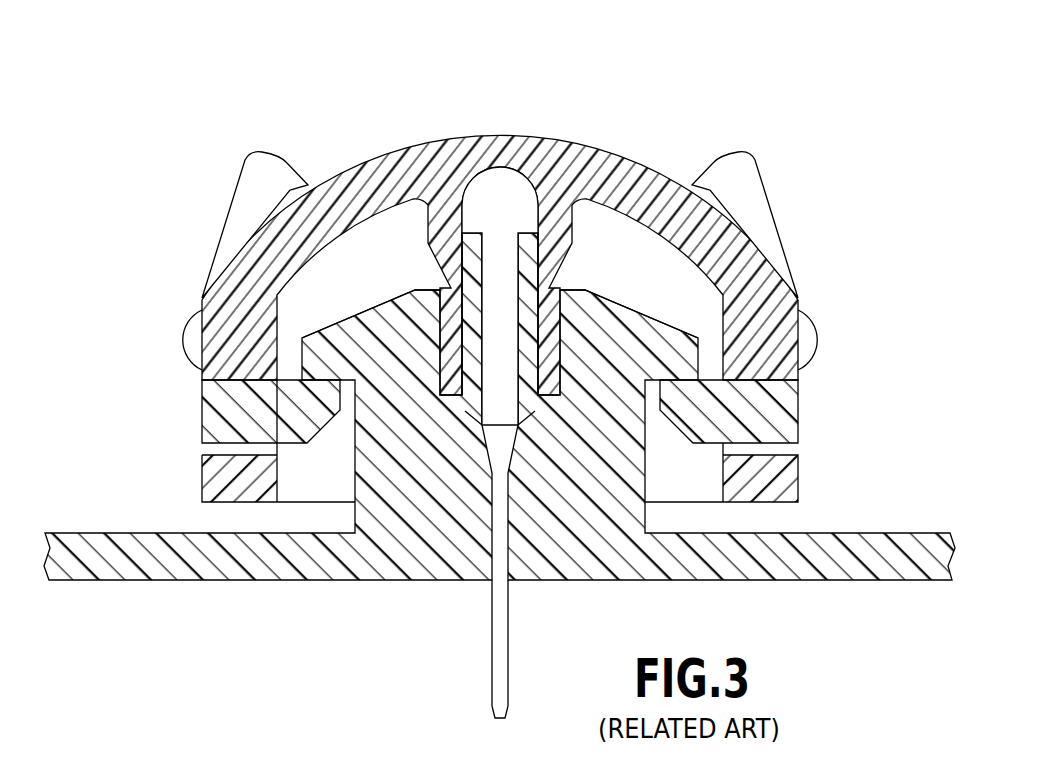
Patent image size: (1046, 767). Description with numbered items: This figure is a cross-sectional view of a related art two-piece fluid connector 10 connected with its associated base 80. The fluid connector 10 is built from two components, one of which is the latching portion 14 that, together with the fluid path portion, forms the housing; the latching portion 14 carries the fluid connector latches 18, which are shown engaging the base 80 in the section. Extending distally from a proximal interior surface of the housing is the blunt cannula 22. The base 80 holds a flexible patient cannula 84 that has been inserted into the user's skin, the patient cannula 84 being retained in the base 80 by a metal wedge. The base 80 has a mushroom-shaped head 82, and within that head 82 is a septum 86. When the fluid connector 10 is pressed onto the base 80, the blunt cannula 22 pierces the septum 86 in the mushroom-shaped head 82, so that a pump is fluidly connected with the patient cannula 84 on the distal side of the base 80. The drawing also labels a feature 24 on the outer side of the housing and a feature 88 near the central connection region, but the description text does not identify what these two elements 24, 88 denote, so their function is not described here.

The fluid connector 10 is at (604, 116).
The latching portion 14 is at (748, 173).
The fluid connector latches 18 is at (697, 418).
The blunt cannula 22 is at (470, 327).
The side protrusion 24 is at (804, 350).
The base 80 is at (98, 484).
The mushroom-shaped head 82 is at (368, 318).
The patient cannula 84 is at (508, 687).
The septum 86 is at (551, 332).
The pin receiving portion 88 is at (561, 373).